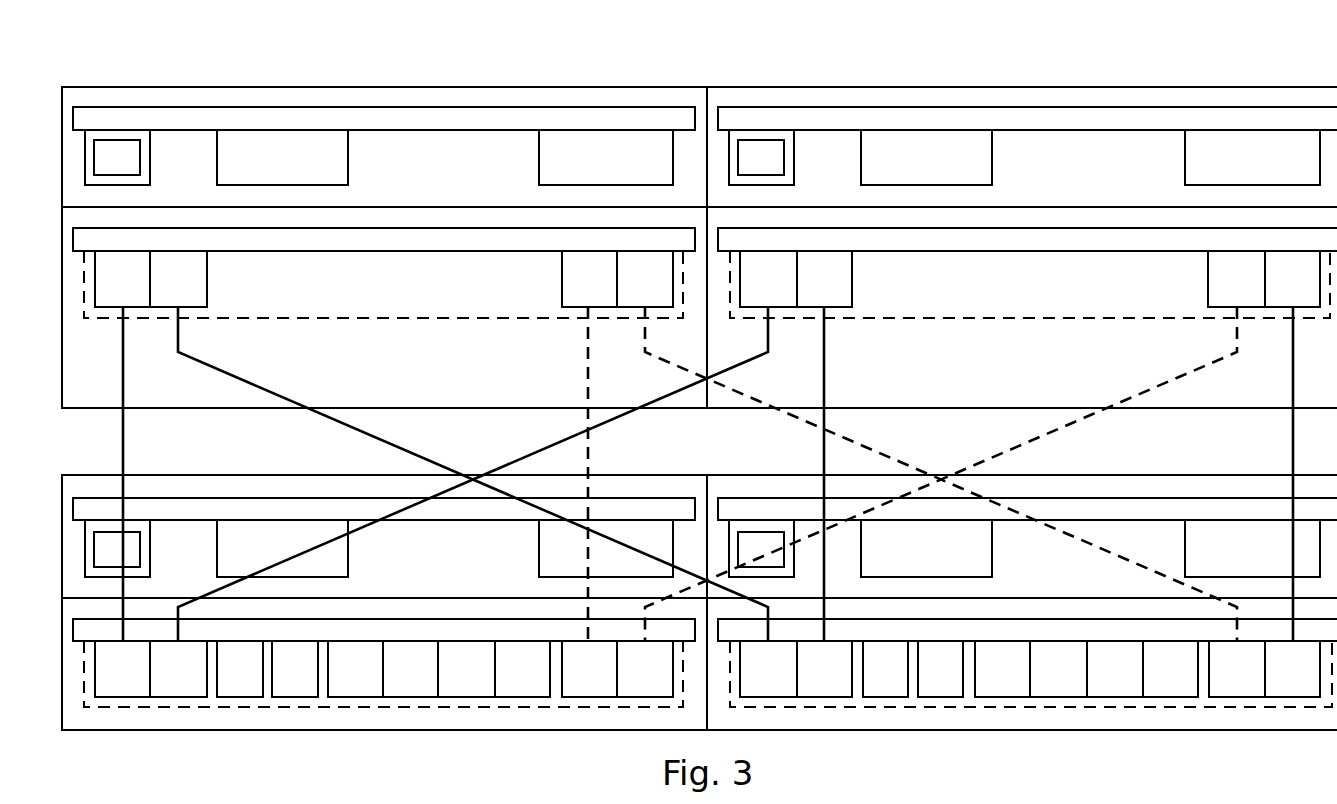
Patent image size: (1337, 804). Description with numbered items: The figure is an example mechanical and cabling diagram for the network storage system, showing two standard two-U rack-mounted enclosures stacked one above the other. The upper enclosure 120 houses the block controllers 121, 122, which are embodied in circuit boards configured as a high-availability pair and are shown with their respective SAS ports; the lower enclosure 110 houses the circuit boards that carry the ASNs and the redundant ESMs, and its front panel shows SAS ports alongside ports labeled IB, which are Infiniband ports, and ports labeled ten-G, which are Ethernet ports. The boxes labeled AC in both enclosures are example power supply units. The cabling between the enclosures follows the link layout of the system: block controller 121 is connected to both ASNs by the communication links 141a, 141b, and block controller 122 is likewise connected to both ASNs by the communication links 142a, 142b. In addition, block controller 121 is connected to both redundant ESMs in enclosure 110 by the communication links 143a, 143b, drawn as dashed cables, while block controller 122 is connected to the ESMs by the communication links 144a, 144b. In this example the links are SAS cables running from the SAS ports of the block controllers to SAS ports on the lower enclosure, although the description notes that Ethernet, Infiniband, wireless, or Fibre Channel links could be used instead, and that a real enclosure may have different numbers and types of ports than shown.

The enclosure 120 is at (699, 217).
The enclosure 110 is at (684, 471).
The block controller 121 is at (403, 298).
The block controller 122 is at (1010, 297).
The communication link 141a is at (127, 443).
The communication link 141b is at (257, 383).
The communication link 142a is at (510, 461).
The communication link 142b is at (828, 366).
The communication link 143a is at (586, 373).
The communication link 143b is at (917, 445).
The communication link 144a is at (1160, 380).
The communication link 144b is at (1292, 438).